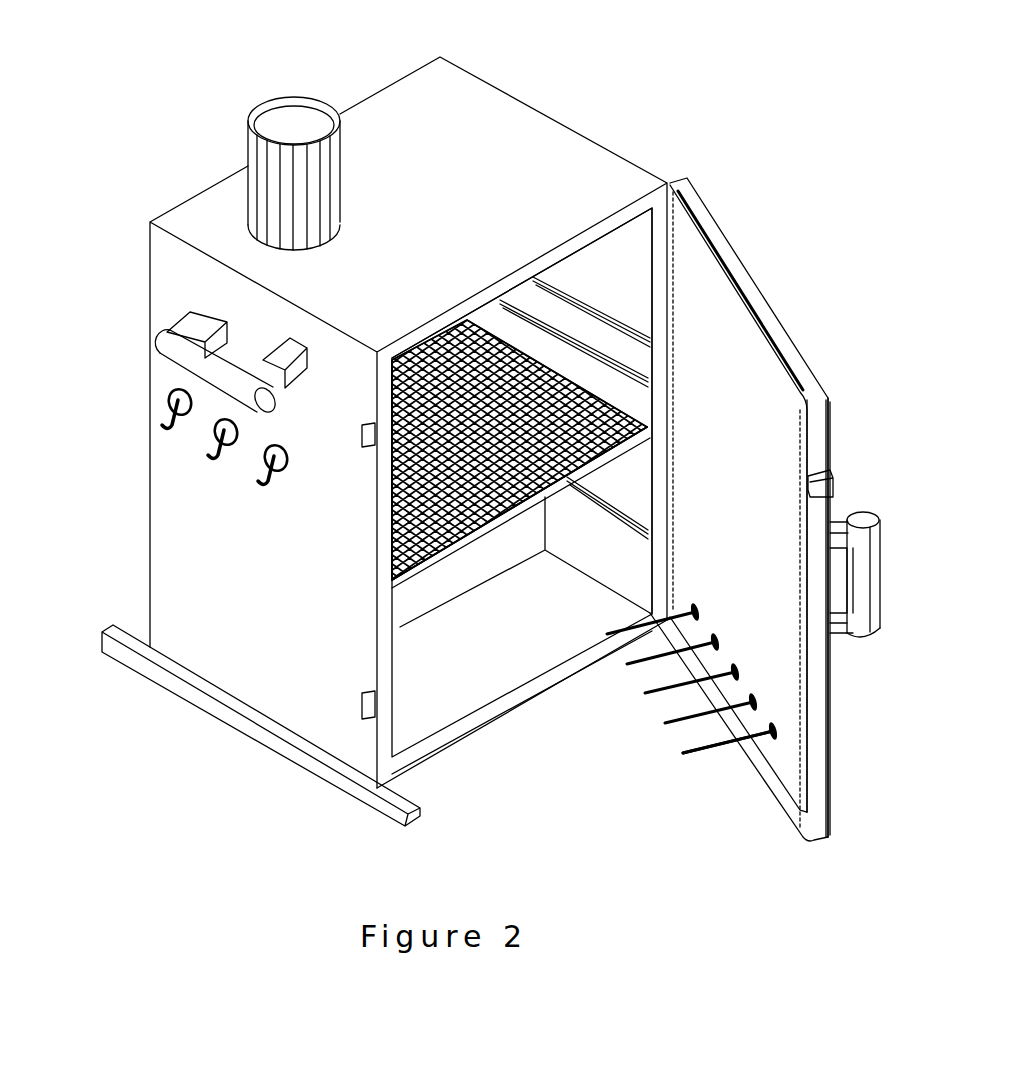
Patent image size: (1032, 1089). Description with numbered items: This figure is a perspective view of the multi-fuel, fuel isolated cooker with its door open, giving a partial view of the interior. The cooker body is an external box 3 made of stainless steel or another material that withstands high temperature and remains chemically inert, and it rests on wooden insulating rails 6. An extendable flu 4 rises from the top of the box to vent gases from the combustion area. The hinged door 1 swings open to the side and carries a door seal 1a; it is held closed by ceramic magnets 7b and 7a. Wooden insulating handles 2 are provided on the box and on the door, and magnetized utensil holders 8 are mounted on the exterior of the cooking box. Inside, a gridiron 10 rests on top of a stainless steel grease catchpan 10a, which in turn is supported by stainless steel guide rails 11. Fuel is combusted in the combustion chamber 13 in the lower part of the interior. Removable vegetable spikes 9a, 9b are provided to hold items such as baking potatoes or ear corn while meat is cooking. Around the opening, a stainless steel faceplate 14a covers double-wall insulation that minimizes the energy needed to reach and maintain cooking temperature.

The hinged door 1 is at (732, 420).
The door seal 1a is at (803, 677).
The wooden insulating handles 2 is at (163, 347).
The external box 3 is at (200, 222).
The extendable flu 4 is at (245, 130).
The wooden insulating rails 6 is at (108, 648).
The ceramic magnet 7a is at (363, 707).
The ceramic magnet 7b is at (830, 483).
The magnetized utensil holders 8 is at (215, 423).
The removable vegetable spike 9a is at (780, 730).
The removable vegetable spike 9b is at (713, 752).
The gridiron 10 is at (487, 333).
The grease catchpan 10a is at (418, 562).
The guide rails 11 is at (640, 323).
The combustion chamber 13 is at (412, 602).
The faceplate 14a is at (660, 237).